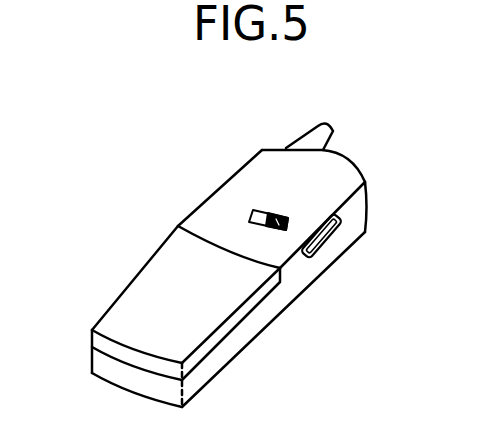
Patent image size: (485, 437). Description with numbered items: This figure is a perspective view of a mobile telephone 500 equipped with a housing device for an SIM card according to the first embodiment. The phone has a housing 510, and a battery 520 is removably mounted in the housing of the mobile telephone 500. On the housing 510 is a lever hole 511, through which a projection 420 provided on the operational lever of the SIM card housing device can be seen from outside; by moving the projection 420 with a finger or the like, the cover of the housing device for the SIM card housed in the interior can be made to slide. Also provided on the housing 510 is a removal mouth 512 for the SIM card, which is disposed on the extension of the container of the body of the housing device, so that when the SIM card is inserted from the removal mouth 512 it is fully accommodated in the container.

The mobile telephone 500 is at (346, 157).
The housing 510 is at (252, 174).
The lever hole 511 is at (247, 214).
The removal mouth 512 is at (338, 226).
The battery 520 is at (157, 265).
The projection 420 is at (285, 231).